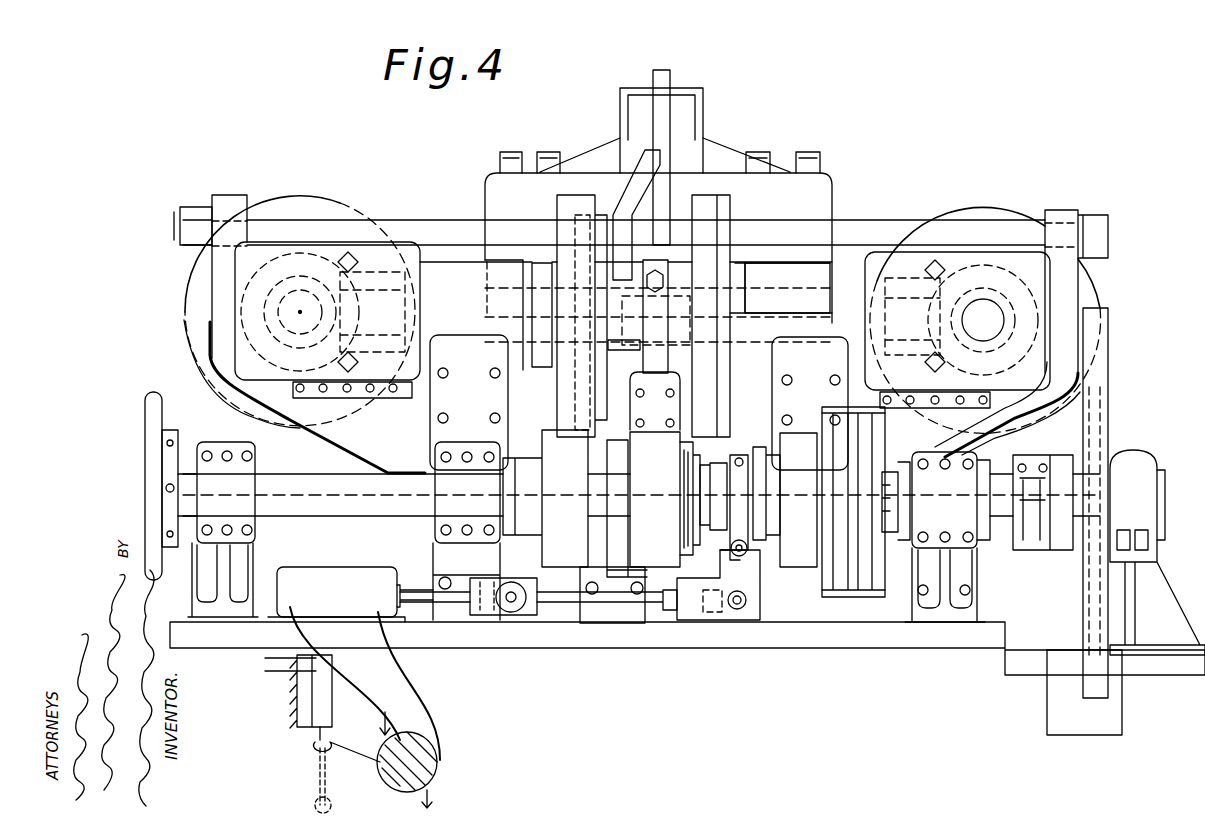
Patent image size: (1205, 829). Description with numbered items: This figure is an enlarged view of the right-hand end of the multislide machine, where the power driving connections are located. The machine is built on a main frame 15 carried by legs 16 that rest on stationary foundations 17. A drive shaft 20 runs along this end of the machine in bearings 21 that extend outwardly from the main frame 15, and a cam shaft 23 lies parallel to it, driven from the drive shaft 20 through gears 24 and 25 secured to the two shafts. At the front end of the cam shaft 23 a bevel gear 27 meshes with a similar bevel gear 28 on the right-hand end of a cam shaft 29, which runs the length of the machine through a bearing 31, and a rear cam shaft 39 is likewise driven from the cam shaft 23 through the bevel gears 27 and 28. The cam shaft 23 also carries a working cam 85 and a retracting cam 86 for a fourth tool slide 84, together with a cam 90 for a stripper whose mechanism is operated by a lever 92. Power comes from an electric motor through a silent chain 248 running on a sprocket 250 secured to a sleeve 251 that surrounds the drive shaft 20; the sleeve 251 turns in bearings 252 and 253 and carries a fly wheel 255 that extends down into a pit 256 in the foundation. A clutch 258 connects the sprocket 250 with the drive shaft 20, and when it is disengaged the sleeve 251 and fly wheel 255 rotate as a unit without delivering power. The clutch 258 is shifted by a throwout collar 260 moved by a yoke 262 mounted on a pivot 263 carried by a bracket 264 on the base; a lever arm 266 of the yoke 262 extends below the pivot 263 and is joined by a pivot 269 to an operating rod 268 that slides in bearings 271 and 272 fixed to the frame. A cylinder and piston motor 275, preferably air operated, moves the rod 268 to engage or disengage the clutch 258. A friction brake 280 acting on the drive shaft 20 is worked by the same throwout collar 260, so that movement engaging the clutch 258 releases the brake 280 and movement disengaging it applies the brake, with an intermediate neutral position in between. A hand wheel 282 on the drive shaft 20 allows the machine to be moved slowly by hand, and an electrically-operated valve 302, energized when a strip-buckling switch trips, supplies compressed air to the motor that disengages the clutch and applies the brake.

The main frame 15 is at (472, 193).
The legs 16 is at (190, 590).
The stationary foundations 17 is at (178, 640).
The drive shaft 20 is at (342, 512).
The bearings 21 is at (255, 470).
The cam shaft 23 is at (865, 262).
The gear 24 is at (552, 570).
The gear 25 is at (578, 200).
The bevel gear 27 is at (348, 255).
The bevel gear 28 is at (272, 324).
The cam shaft 29 is at (245, 335).
The bearing 31 is at (195, 282).
The cam shaft 39 is at (992, 285).
The fourth tool slide 84 is at (745, 313).
The working cam 85 is at (750, 276).
The retracting cam 86 is at (738, 265).
The cam 90 is at (607, 215).
The lever 92 is at (672, 78).
The silent chain 248 is at (790, 620).
The sprocket 250 is at (840, 580).
The sleeve 251 is at (1000, 545).
The bearing 252 is at (968, 458).
The bearing 253 is at (1130, 462).
The fly wheel 255 is at (1085, 686).
The pit 256 is at (1062, 722).
The clutch 258 is at (745, 603).
The throwout collar 260 is at (672, 530).
The yoke 262 is at (742, 510).
The pivot 263 is at (750, 548).
The bracket 264 is at (760, 574).
The lever arm 266 is at (738, 578).
The operating rod 268 is at (525, 620).
The pivot 269 is at (727, 608).
The bearing 271 is at (670, 606).
The bearing 272 is at (475, 588).
The cylinder and piston motor 275 is at (312, 575).
The friction brake 280 is at (557, 640).
The hand wheel 282 is at (150, 400).
The electrically-operated valve 302 is at (454, 769).